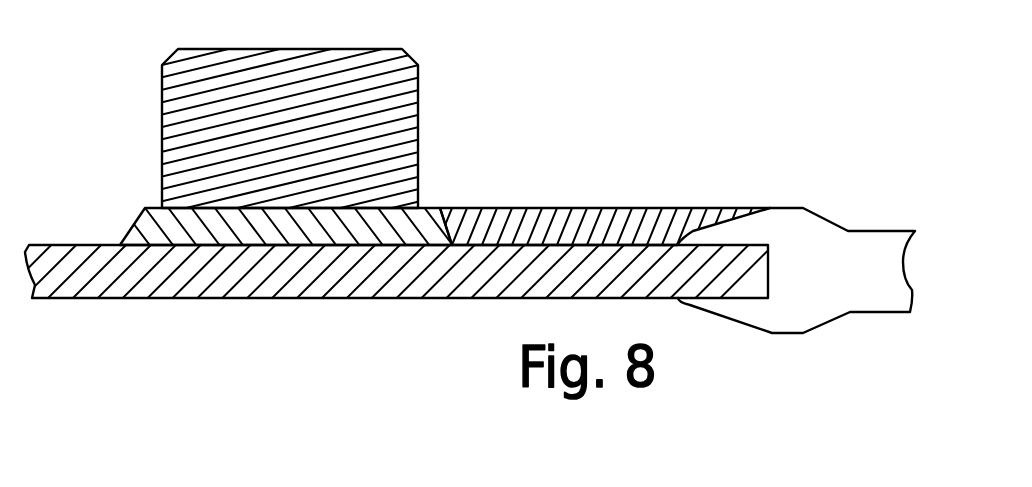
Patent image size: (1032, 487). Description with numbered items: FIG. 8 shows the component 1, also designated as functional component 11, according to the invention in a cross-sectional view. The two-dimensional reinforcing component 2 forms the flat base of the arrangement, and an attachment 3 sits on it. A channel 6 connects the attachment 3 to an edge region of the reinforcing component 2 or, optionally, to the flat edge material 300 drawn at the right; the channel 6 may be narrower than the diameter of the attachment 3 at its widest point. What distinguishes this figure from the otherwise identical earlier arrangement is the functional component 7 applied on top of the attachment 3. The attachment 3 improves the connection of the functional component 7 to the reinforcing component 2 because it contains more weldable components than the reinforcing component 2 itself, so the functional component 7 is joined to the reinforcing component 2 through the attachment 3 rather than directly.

The component 1 is at (768, 158).
The functional component 11 is at (768, 158).
The reinforcing component 2 is at (85, 298).
The attachment 3 is at (145, 208).
The channel 6 is at (553, 208).
The functional component 7 is at (418, 73).
The flat edge material 300 is at (828, 216).